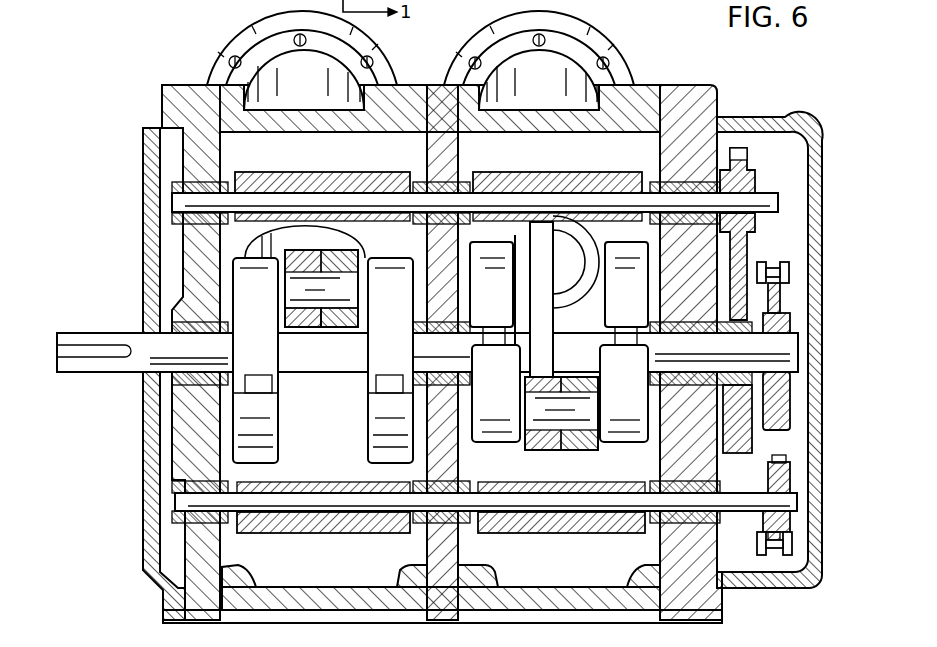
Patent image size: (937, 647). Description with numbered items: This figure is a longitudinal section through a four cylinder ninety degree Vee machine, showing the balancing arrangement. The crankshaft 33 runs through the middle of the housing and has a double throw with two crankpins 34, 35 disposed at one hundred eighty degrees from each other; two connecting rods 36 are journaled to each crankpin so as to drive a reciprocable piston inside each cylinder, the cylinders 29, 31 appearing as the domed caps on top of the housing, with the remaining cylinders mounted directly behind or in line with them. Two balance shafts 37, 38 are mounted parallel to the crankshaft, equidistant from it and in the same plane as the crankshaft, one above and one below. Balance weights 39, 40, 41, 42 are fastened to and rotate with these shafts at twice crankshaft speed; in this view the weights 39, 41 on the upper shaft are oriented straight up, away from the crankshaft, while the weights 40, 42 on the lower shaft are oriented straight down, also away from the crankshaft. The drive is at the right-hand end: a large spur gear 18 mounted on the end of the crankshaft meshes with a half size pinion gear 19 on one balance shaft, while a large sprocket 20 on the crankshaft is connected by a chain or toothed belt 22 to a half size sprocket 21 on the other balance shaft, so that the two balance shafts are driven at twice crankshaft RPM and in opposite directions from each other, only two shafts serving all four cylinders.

The spur gear 18 is at (737, 422).
The pinion gear 19 is at (750, 176).
The sprocket 20 is at (778, 297).
The sprocket 21 is at (787, 472).
The chain or toothed belt 22 is at (758, 538).
The cylinder 29 is at (267, 68).
The cylinder 31 is at (572, 67).
The crankshaft 33 is at (103, 340).
The crankpin 34 is at (345, 288).
The crankpin 35 is at (585, 410).
The connecting rod 36 is at (338, 328).
The balance shaft 37 is at (172, 205).
The balance shaft 38 is at (175, 503).
The balance weight 39 is at (362, 183).
The balance weight 40 is at (346, 530).
The balance weight 41 is at (574, 183).
The balance weight 42 is at (592, 530).